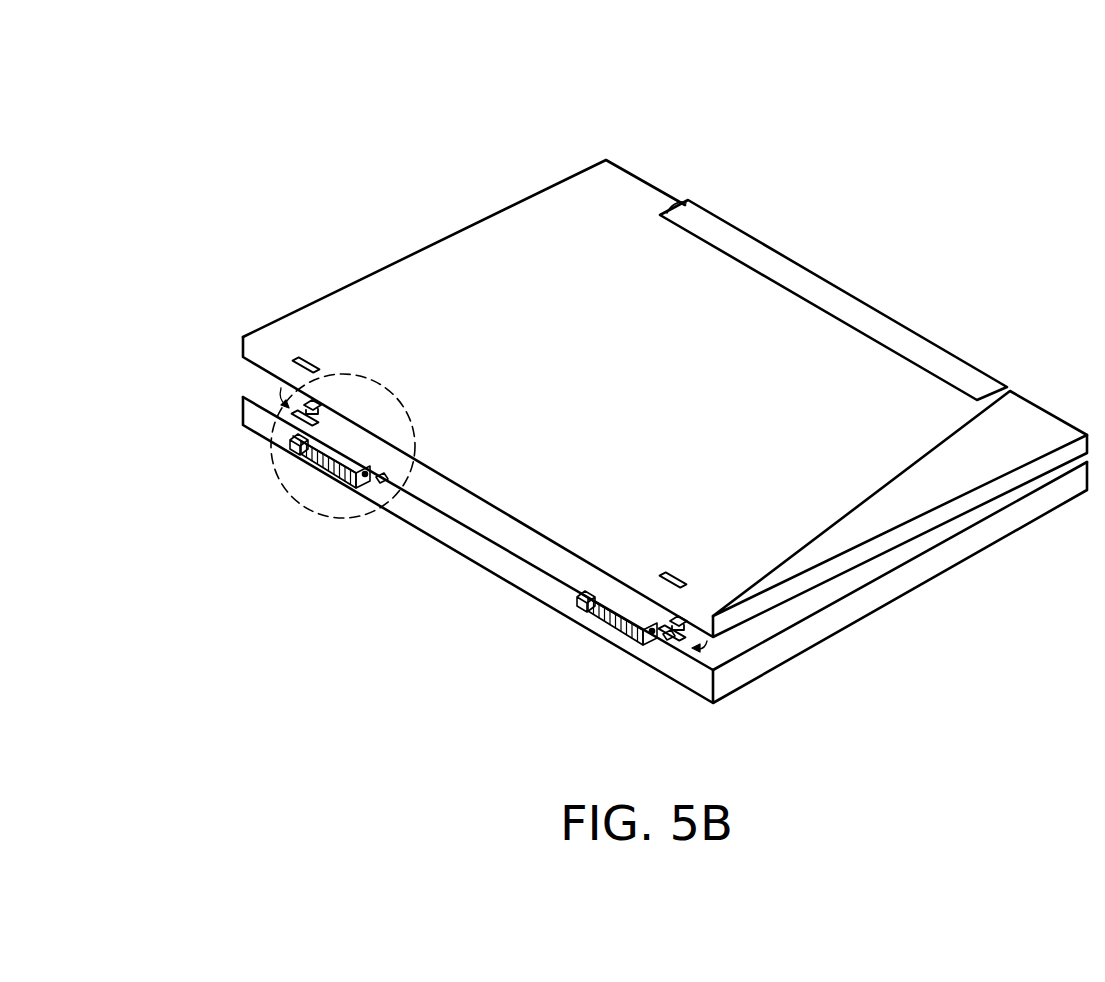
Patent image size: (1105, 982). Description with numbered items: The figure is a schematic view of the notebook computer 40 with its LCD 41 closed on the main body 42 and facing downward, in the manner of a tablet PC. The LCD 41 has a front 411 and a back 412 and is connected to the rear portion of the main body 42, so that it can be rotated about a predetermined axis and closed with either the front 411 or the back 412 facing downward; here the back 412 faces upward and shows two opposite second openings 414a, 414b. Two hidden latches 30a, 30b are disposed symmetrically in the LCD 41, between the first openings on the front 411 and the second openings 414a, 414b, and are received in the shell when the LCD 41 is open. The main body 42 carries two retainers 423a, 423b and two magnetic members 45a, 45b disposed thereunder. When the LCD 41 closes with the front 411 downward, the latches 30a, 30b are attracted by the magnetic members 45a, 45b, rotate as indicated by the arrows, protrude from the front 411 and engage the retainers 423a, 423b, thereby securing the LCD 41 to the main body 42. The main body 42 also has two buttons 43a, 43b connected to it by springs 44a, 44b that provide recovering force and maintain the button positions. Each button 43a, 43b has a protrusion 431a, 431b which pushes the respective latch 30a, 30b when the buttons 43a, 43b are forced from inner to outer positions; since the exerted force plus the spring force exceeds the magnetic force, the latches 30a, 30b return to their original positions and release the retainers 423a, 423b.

The notebook computer 40 is at (222, 86).
The LCD 41 is at (266, 324).
The back 412 is at (457, 268).
The second opening 414a is at (309, 357).
The second opening 414b is at (673, 573).
The main body 42 is at (237, 404).
The front 411 is at (765, 620).
The retainer 423a is at (290, 410).
The retainer 423b is at (640, 657).
The latch 30a is at (313, 402).
The latch 30b is at (685, 615).
The button 43a is at (323, 483).
The button 43b is at (567, 617).
The protrusion 431a is at (398, 393).
The protrusion 431b is at (617, 607).
The spring 44a is at (347, 512).
The spring 44b is at (578, 592).
The magnetic member 45a is at (318, 366).
The magnetic member 45b is at (612, 640).